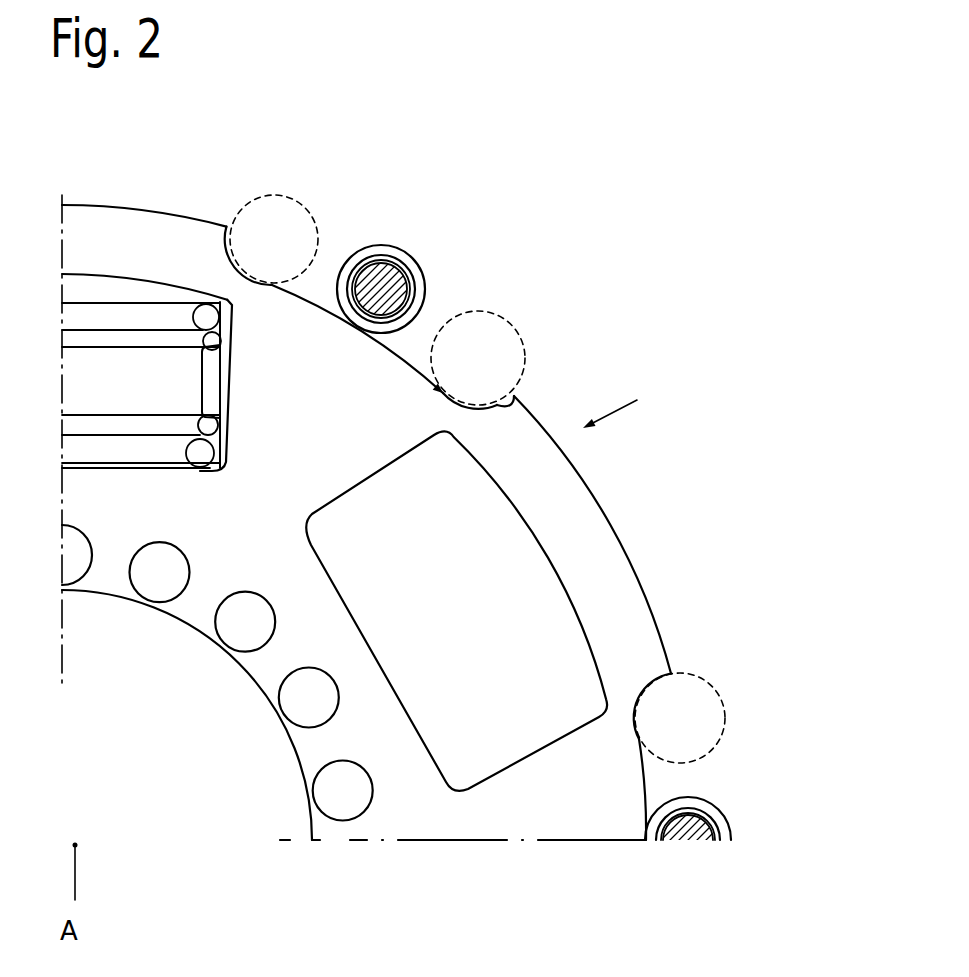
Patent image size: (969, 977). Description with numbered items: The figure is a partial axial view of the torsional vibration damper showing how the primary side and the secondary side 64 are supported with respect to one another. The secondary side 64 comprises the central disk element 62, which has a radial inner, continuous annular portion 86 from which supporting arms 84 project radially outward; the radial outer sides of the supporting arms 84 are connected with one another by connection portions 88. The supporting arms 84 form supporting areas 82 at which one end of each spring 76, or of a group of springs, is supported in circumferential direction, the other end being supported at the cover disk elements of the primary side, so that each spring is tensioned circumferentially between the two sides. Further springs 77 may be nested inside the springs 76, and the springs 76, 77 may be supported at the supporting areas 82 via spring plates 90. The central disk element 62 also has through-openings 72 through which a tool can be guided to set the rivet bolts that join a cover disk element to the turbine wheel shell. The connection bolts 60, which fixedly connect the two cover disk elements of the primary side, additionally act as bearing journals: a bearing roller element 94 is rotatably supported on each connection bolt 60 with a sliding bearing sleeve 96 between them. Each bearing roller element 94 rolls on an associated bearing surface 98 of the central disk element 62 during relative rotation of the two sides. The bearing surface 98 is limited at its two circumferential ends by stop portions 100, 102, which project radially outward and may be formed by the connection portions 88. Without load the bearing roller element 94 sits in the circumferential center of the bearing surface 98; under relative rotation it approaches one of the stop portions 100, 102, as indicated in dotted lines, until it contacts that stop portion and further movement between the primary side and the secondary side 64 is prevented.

The connection bolts 60 is at (403, 290).
The central disk element 62 is at (587, 842).
The secondary side 64 is at (628, 400).
The through-openings 72 is at (347, 802).
The springs 76 is at (128, 313).
The springs 77 is at (80, 340).
The supporting areas 82 is at (270, 375).
The supporting arms 84 is at (305, 440).
The annular portion 86 is at (390, 767).
The connection portions 88 is at (568, 497).
The spring plates 90 is at (210, 383).
The bearing roller elements 94 is at (407, 263).
The sliding bearing sleeve 96 is at (425, 277).
The bearing surface 98 is at (507, 328).
The stop portion 100 is at (228, 240).
The stop portion 102 is at (518, 402).